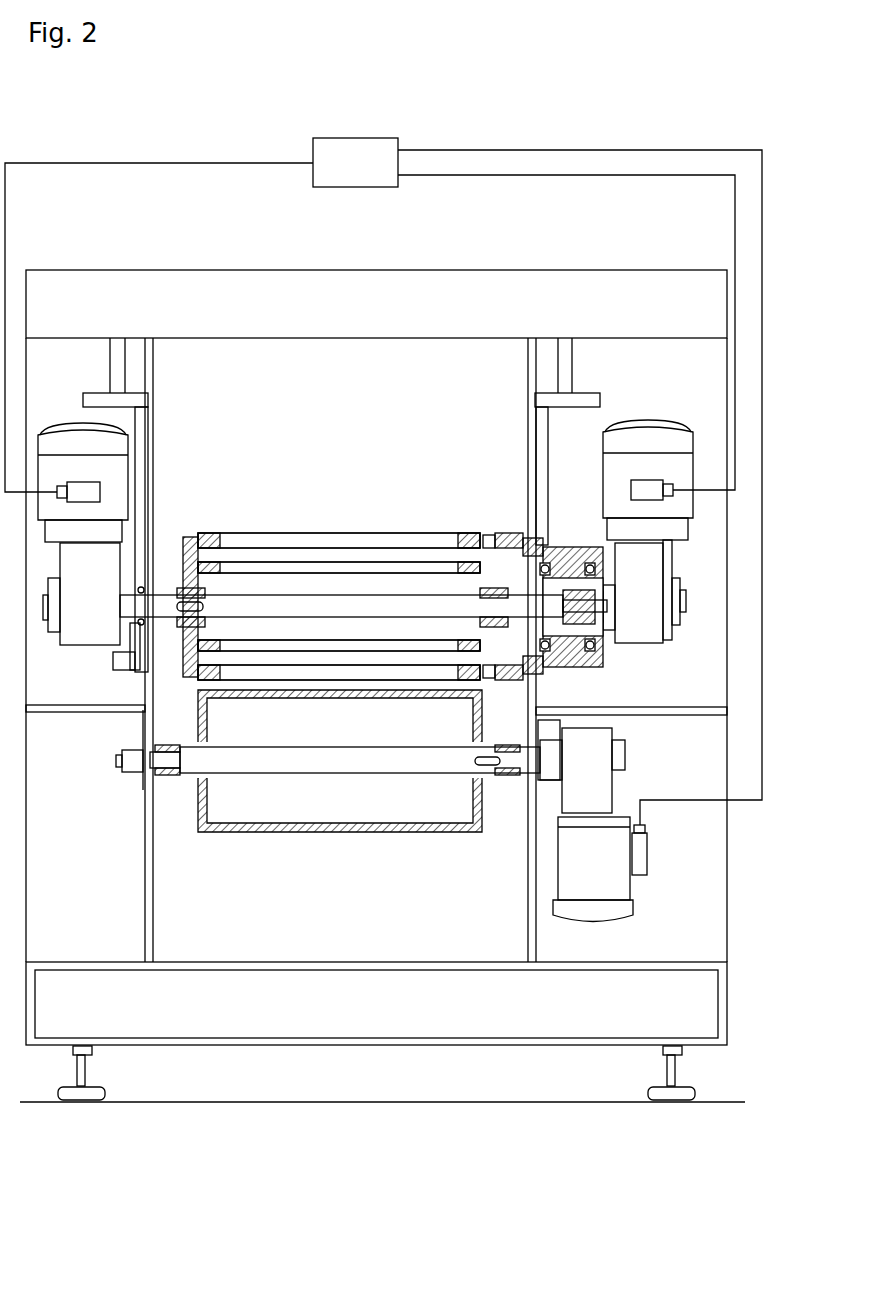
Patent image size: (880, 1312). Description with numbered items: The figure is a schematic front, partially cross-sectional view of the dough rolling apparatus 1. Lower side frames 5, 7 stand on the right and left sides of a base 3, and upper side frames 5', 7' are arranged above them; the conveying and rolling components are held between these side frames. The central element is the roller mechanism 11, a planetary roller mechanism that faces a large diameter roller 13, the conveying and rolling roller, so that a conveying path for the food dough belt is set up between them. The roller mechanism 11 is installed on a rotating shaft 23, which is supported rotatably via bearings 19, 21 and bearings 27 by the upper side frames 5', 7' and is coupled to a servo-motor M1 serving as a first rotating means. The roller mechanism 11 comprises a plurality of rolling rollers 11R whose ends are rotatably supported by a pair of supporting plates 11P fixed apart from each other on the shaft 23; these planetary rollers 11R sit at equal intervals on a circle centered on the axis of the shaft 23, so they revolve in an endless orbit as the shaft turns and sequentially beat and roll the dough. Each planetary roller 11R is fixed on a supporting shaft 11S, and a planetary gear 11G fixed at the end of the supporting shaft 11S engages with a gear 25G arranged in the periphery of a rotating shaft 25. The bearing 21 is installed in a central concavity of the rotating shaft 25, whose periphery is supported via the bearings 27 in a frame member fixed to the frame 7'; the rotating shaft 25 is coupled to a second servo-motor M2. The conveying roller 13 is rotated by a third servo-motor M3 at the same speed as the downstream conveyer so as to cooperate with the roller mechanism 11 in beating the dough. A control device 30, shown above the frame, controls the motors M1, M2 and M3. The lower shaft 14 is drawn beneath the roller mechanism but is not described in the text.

The rolling apparatus 1 is at (490, 262).
The base 3 is at (360, 1013).
The lower side frame 5 is at (168, 756).
The upper side frame 5' is at (154, 539).
The lower side frame 7 is at (512, 756).
The upper side frame 7' is at (562, 476).
The roller mechanism 11 is at (215, 533).
The supporting plates 11P is at (183, 560).
The rolling rollers 11R is at (365, 545).
The supporting shaft 11S is at (398, 555).
The planetary gear 11G is at (515, 535).
The large diameter roller 13 is at (355, 832).
The lower shaft 14 is at (310, 762).
The bearing 19 is at (150, 625).
The bearing 21 is at (585, 655).
The rotating shaft 23 is at (340, 605).
The rotating shaft 25 is at (593, 603).
The gear 25G is at (530, 543).
The bearings 27 is at (540, 658).
The control device 30 is at (383, 481).
The motor M1 is at (78, 455).
The motor M2 is at (650, 455).
The motor M3 is at (625, 883).